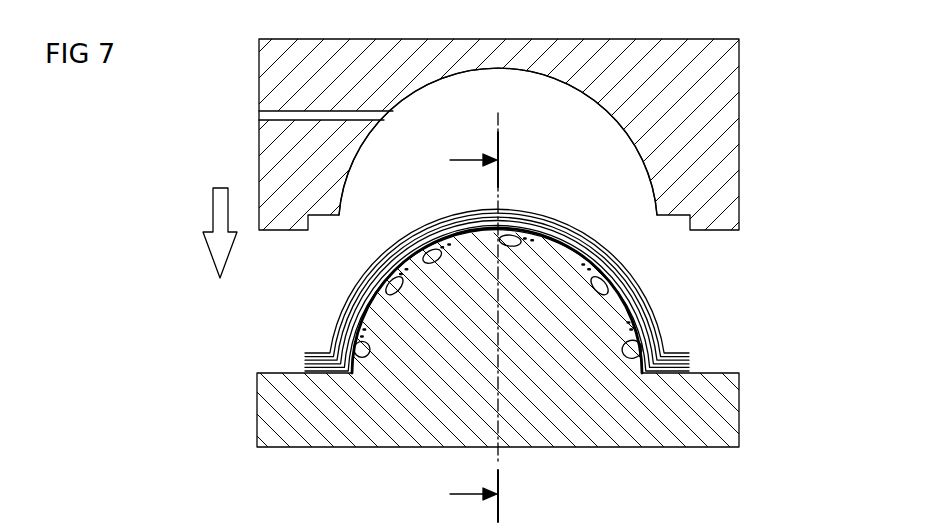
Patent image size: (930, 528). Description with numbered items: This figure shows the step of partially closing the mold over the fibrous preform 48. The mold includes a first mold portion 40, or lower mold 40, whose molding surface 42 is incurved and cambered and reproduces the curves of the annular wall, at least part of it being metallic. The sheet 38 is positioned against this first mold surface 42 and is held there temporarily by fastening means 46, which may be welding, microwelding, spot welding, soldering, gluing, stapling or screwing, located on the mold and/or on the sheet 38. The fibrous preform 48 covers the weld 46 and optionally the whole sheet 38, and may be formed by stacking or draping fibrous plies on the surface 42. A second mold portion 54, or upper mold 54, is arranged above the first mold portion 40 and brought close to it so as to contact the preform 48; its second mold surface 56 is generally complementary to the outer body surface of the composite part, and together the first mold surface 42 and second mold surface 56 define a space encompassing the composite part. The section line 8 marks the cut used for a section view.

The second mold portion 54 is at (739, 118).
The second mold surface 56 is at (583, 96).
The first mold portion 40 is at (257, 398).
The sheet 38 is at (460, 238).
The molding surface 42 is at (418, 257).
The fastening means 46 is at (527, 235).
The fibrous preform 48 is at (340, 302).
The section line 8- 8 is at (474, 327).